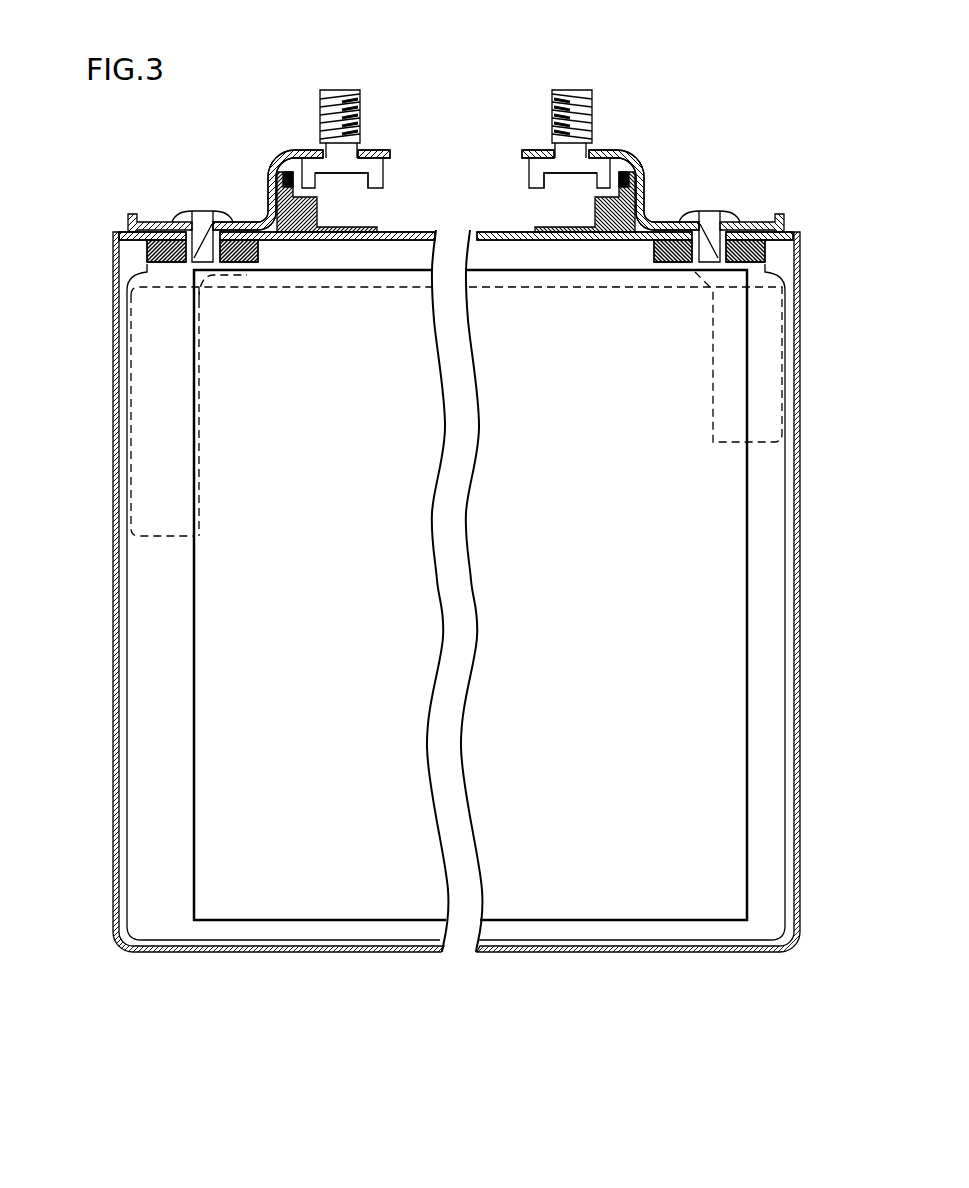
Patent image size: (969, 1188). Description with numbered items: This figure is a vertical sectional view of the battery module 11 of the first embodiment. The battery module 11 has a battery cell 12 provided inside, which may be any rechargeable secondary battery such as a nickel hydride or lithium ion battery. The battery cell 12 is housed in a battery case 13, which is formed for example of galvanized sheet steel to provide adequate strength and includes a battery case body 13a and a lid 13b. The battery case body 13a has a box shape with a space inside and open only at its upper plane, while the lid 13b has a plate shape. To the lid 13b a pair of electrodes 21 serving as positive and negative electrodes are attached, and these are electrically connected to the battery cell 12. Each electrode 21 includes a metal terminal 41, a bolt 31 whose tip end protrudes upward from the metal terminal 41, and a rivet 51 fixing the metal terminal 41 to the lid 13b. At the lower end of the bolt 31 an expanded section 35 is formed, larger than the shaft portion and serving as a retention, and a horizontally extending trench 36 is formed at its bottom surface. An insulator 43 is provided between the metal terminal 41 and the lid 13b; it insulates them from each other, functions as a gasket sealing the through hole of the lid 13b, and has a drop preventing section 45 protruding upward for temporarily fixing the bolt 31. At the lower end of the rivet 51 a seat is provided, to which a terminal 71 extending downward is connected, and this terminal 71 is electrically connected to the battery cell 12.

The battery module 11 is at (562, 957).
The battery cell 12 is at (300, 877).
The battery case 13 is at (47, 208).
The battery case body 13a is at (112, 260).
The lid 13b is at (114, 232).
The electrode 21 is at (250, 150).
The bolt 31 is at (362, 112).
The expanded section 35 is at (377, 170).
The trench 36 is at (352, 183).
The metal terminal 41 is at (278, 153).
The insulator 43 is at (127, 216).
The drop preventing section 45 is at (308, 211).
The rivet 51 is at (199, 217).
The terminal 71 is at (158, 404).